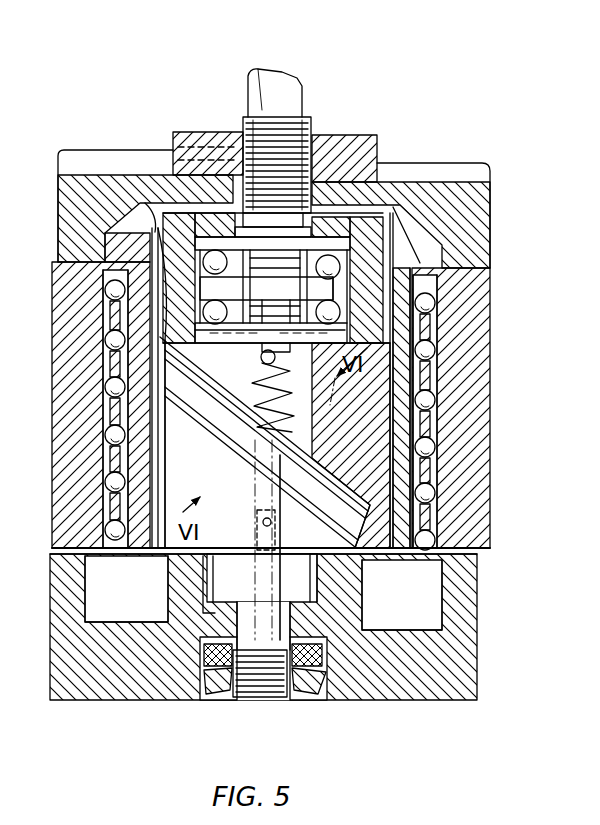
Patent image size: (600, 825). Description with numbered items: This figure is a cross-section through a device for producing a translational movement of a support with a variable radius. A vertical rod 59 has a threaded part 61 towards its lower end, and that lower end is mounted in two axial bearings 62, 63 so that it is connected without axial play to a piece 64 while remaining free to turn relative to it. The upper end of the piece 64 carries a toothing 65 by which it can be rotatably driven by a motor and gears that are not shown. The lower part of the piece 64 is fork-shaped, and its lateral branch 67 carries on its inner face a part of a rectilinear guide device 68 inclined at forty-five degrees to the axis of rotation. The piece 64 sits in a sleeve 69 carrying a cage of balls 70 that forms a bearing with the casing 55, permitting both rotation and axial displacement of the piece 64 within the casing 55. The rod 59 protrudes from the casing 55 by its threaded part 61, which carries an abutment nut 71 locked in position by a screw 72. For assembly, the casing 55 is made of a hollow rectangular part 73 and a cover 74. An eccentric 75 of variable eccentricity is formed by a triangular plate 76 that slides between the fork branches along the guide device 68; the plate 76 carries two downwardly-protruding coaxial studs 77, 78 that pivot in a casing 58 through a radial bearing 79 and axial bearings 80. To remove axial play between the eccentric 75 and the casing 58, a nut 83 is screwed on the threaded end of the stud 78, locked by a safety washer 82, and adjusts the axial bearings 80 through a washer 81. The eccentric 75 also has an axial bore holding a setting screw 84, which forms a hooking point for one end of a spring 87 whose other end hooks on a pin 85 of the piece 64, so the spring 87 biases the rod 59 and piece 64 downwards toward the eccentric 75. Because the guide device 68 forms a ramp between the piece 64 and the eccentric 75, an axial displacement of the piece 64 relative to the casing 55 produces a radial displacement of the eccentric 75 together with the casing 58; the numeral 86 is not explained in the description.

The casing 55 is at (466, 430).
The casing 58 is at (470, 662).
The vertical rod 59 is at (256, 95).
The threaded part 61 is at (297, 149).
The axial bearing 62 is at (374, 232).
The axial bearing 63 is at (440, 323).
The piece 64 is at (395, 360).
The toothing 65 is at (143, 200).
The lateral branch 67 is at (375, 522).
The rectilinear guide device 68 is at (290, 438).
The sleeve 69 is at (124, 462).
The balls 70 is at (104, 388).
The abutment nut 71 is at (350, 150).
The screw 72 is at (173, 147).
The hollow rectangular part 73 is at (62, 462).
The cover 74 is at (490, 211).
The eccentric 75 is at (150, 517).
The triangular plate 76 is at (172, 577).
The stud 77 is at (345, 574).
The stud 78 is at (268, 700).
The radial bearing 79 is at (330, 597).
The axial bearings 80 is at (204, 650).
The washer 81 is at (322, 668).
The safety washer 82 is at (212, 692).
The nut 83 is at (232, 698).
The setting screw 84 is at (215, 592).
The pin 85 is at (224, 349).
The retaining plate 86 is at (195, 328).
The spring 87 is at (262, 524).